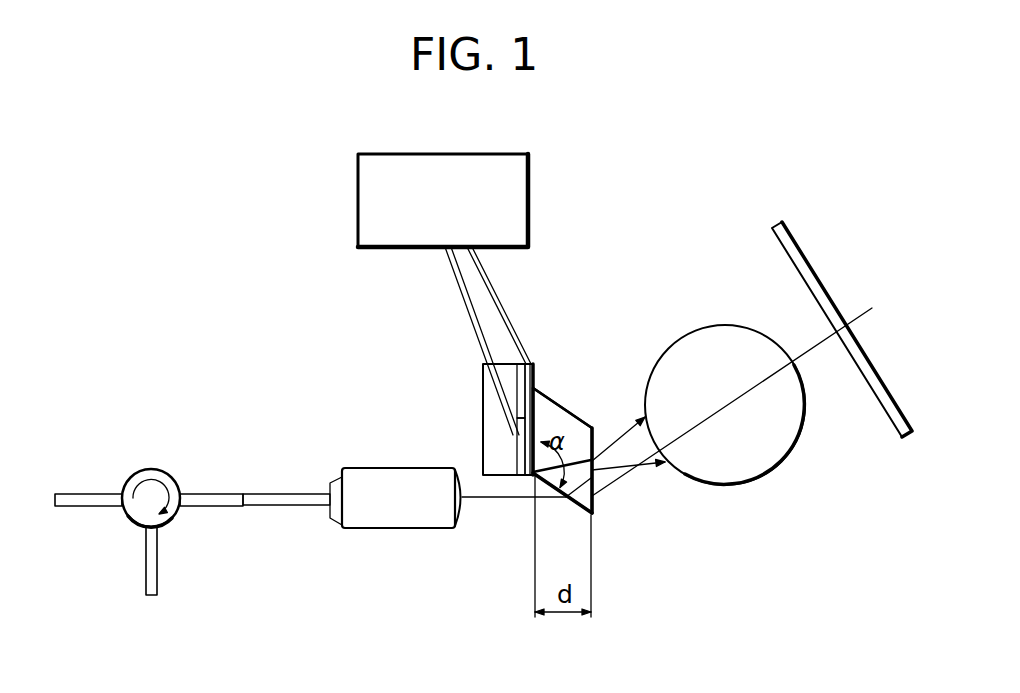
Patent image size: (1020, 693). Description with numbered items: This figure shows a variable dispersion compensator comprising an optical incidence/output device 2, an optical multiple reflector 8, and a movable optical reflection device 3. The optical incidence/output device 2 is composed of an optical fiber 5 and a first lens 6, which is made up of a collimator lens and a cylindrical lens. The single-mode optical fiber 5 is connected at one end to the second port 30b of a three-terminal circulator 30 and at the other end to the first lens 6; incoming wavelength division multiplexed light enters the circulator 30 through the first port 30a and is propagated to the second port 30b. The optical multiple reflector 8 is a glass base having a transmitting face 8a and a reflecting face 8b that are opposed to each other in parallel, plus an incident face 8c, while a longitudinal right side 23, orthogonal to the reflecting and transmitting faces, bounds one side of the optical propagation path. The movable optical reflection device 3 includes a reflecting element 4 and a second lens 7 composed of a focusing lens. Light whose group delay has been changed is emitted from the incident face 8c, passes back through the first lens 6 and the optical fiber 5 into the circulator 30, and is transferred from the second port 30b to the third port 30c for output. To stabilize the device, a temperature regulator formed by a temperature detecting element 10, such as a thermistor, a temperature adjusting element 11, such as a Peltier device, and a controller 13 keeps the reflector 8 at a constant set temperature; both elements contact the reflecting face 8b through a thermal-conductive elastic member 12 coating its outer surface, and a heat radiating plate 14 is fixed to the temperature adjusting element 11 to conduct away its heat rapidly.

The optical incidence/output device 2 is at (352, 434).
The movable optical reflection device 3 is at (778, 304).
The reflecting element 4 is at (824, 303).
The optical fiber 5 is at (290, 500).
The first lens 6 is at (395, 456).
The second lens 7 is at (717, 342).
The optical multiple reflector 8 is at (578, 410).
The transmitting face 8a is at (595, 505).
The reflecting face 8b is at (562, 420).
The incident face 8c is at (572, 503).
The temperature detecting element 10 is at (520, 388).
The temperature adjusting element 11 is at (521, 447).
The thermal-conductive elastic member 12 is at (537, 373).
The controller 13 is at (372, 193).
The heat radiating plate 14 is at (488, 378).
The longitudinal right side 23 is at (620, 477).
The three-terminal circulator 30 is at (140, 510).
The port (1) 30a is at (122, 492).
The port (2) 30b is at (183, 492).
The port (3) 30c is at (157, 528).